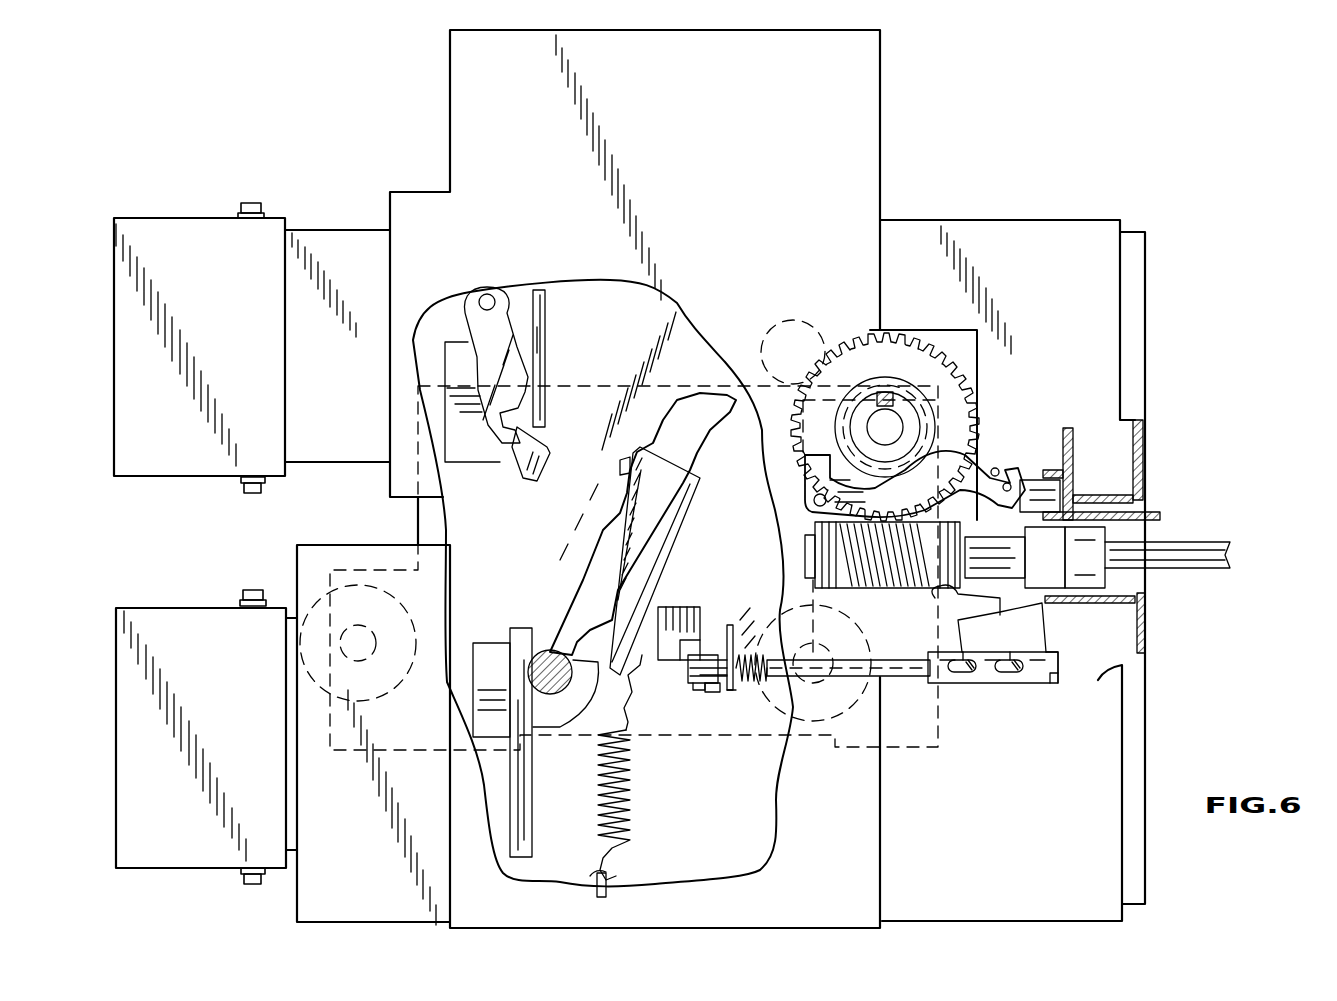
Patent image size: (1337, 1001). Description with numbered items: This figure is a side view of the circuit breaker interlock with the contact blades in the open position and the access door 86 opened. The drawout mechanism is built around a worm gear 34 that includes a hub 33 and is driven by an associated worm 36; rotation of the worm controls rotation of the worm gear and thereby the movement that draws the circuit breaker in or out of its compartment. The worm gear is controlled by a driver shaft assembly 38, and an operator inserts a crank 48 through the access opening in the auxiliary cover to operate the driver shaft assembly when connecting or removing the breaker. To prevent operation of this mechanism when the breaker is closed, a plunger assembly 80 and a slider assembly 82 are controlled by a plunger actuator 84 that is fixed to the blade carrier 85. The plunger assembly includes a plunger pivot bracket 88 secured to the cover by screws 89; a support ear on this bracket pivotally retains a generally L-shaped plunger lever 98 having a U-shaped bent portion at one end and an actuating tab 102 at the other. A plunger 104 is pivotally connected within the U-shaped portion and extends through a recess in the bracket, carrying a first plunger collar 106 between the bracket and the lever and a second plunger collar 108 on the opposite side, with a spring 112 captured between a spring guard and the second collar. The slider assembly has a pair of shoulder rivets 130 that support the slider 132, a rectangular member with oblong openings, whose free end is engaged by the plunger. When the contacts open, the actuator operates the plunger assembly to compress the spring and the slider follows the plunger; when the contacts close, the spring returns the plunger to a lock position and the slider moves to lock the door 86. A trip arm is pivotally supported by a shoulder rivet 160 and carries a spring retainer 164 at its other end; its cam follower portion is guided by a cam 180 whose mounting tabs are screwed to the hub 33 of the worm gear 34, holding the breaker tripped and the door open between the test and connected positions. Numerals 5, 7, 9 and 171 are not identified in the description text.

The latch lever 5 is at (547, 442).
The striker plate 7 is at (620, 471).
The operating lever 9 is at (592, 578).
The hub 33 is at (884, 393).
The worm gear 34 is at (977, 400).
The worm 36 is at (882, 588).
The driver shaft assembly 38 is at (977, 578).
The crank 48 is at (1195, 555).
The plunger assembly 80 is at (737, 684).
The slider assembly 82 is at (1005, 702).
The plunger actuator 84 is at (658, 683).
The blade carrier 85 is at (668, 541).
The access door 86 is at (1145, 502).
The plunger pivot bracket 88 is at (742, 668).
The screws 89 is at (720, 640).
The plunger lever 98 is at (688, 605).
The actuating tab 102 is at (668, 607).
The plunger 104 is at (837, 678).
The first plunger collar 106 is at (712, 692).
The second plunger collar 108 is at (765, 690).
The spring 112 is at (730, 702).
The shoulder rivets 130 is at (1000, 684).
The slider 132 is at (1030, 685).
The shoulder rivet 160 is at (795, 492).
The spring retainer 164 is at (1018, 483).
The bearing 171 is at (1072, 488).
The cam 180 is at (862, 333).